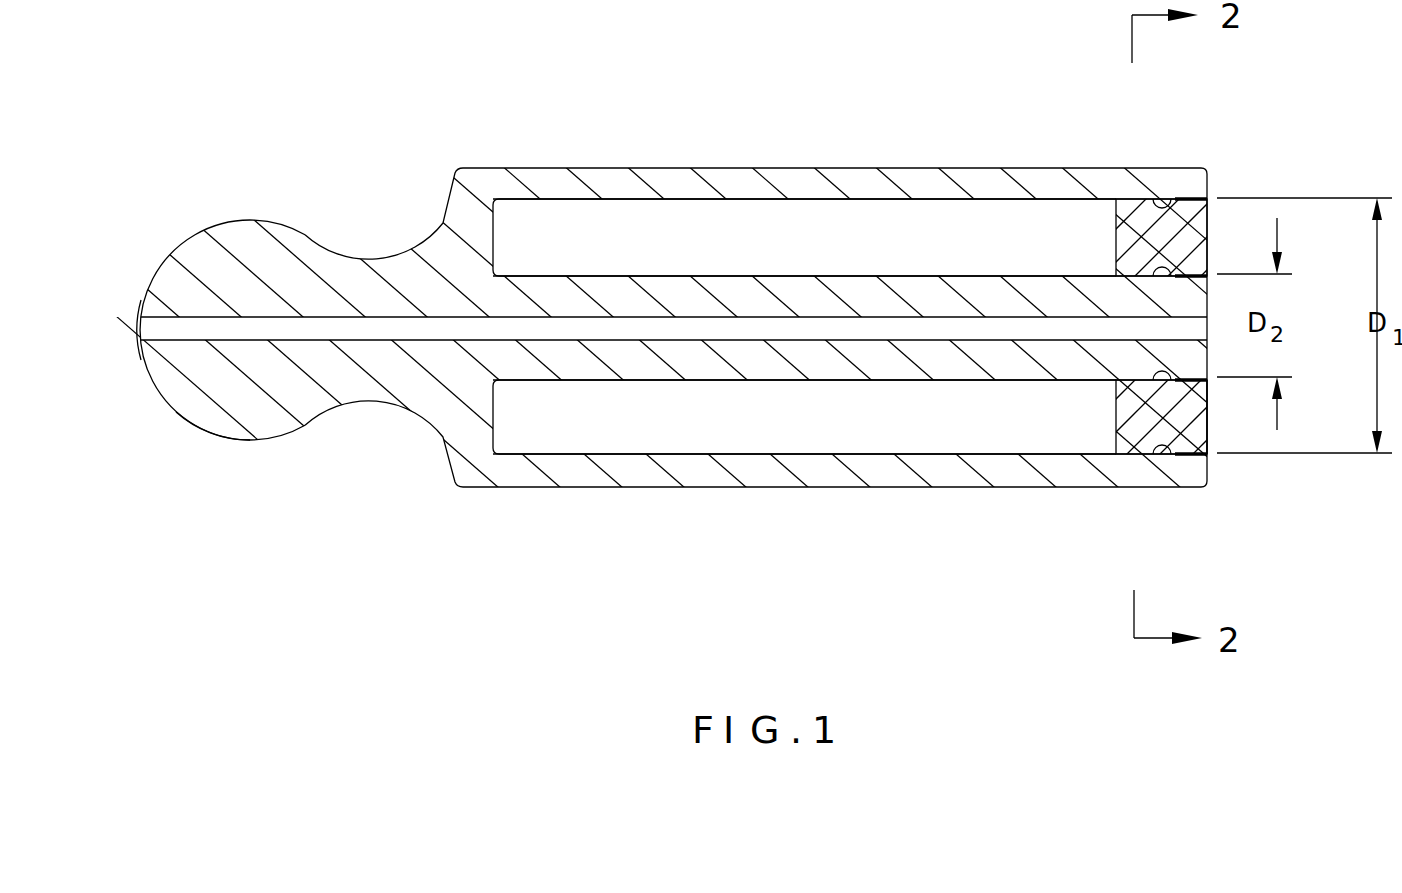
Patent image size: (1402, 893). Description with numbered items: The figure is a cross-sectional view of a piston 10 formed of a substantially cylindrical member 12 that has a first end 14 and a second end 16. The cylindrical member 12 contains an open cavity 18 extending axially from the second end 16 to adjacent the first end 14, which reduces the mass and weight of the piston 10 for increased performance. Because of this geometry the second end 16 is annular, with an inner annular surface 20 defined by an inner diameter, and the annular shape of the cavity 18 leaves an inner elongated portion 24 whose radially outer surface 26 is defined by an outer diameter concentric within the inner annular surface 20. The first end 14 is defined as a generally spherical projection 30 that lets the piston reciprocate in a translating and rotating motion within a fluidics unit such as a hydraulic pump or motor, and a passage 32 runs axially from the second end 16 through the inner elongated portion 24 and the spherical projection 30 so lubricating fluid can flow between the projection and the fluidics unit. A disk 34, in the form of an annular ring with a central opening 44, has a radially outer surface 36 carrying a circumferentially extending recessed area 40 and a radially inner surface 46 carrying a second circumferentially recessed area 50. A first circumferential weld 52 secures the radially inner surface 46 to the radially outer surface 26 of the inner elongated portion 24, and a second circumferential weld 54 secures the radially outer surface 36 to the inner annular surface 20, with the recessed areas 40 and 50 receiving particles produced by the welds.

The piston 10 is at (490, 91).
The cylindrical member 12 is at (660, 168).
The first end 14 is at (165, 213).
The second end 16 is at (1245, 162).
The open cavity 18 is at (740, 233).
The inner annular surface 20 is at (1020, 200).
The inner elongated portion 24 is at (837, 368).
The radially outer surface 26 is at (852, 275).
The spherical projection 30 is at (219, 437).
The passage 32 is at (139, 336).
The disk 34 is at (1210, 428).
The radially outer surface 36 is at (1203, 457).
The recessed area 40 is at (1163, 197).
The central opening 44 is at (1125, 372).
The radially inner surface 46 is at (1180, 268).
The second circumferentially recessed area 50 is at (1172, 380).
The first circumferential weld 52 is at (1210, 436).
The second circumferential weld 54 is at (1190, 199).